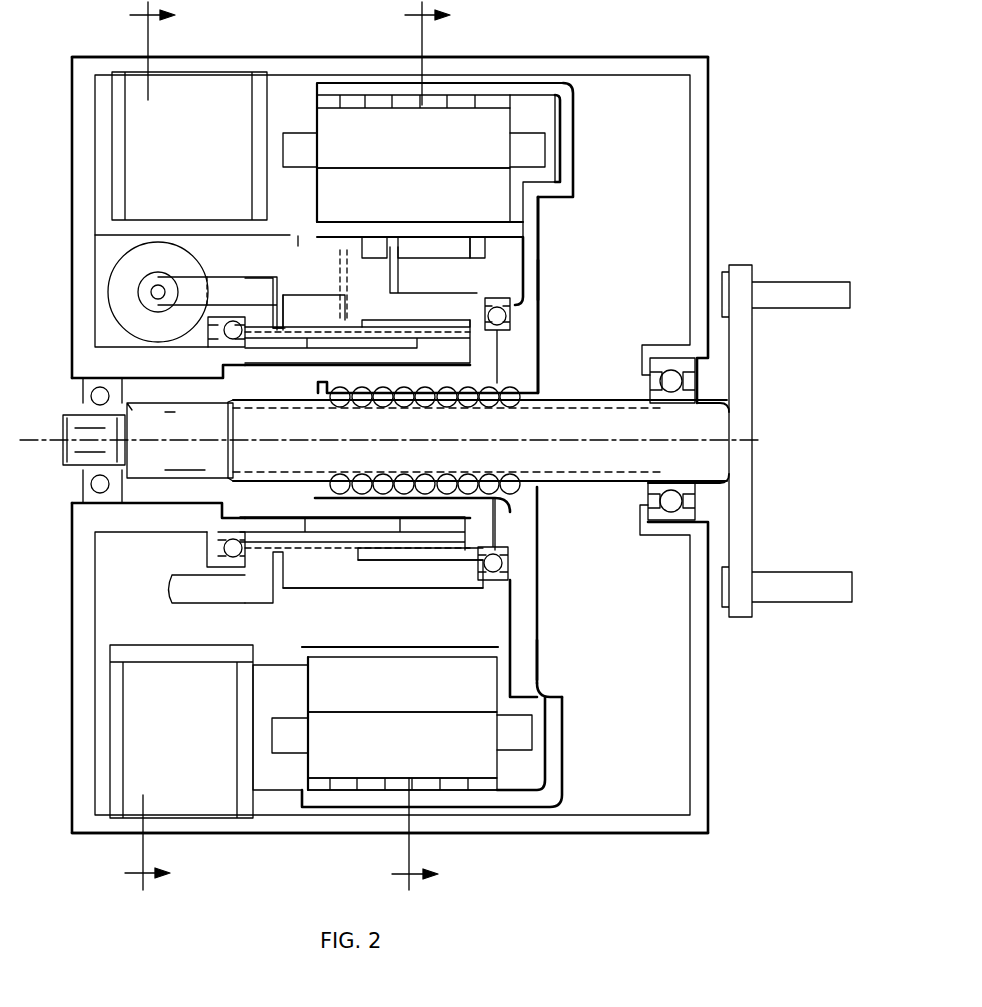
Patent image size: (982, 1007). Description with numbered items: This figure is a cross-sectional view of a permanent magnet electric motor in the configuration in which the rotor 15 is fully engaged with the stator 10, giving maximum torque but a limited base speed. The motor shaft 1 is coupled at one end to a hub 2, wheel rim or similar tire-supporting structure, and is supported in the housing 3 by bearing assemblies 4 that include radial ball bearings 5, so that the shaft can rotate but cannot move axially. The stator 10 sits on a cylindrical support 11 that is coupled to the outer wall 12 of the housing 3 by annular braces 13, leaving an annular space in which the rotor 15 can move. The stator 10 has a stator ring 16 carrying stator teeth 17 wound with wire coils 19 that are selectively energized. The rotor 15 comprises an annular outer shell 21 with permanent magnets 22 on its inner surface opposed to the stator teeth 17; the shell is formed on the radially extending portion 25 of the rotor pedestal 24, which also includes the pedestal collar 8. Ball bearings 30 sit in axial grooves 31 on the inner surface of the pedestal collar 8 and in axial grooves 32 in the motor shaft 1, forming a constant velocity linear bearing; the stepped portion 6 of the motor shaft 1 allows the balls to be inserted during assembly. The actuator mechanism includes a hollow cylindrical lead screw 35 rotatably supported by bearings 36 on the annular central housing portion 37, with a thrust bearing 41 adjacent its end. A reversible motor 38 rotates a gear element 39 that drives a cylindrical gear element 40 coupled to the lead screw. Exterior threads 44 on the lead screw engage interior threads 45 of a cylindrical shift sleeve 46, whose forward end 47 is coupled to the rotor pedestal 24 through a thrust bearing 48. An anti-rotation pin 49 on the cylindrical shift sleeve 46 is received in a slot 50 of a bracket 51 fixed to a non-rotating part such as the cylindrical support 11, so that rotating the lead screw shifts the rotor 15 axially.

The motor shaft 1 is at (612, 470).
The hub 2 is at (780, 262).
The housing 3 is at (78, 258).
The bearing assemblies 4 is at (62, 400).
The radial ball bearings 5 is at (710, 503).
The stepped portion 6 is at (234, 415).
The pedestal collar 8 is at (470, 312).
The stator 10 is at (310, 178).
The cylindrical support 11 is at (303, 251).
The outer wall 12 is at (318, 58).
The annular braces 13 is at (127, 148).
The rotor 15 is at (298, 93).
The stator ring 16 is at (472, 200).
The stator teeth 17 is at (478, 153).
The wire coils 19 is at (520, 145).
The annular outer shell 21 is at (565, 90).
The permanent magnets 22 is at (302, 797).
The rotor pedestal 24 is at (560, 275).
The radially extending portion 25 is at (540, 260).
The ball bearings 30 is at (385, 408).
The axial grooves 31 is at (548, 385).
The axial grooves 32 is at (258, 470).
The hollow cylindrical lead screw 35 is at (330, 325).
The bearings 36 is at (228, 342).
The annular central housing portion 37 is at (328, 362).
The reversible motor 38 is at (180, 240).
The gear element 39 is at (105, 250).
The cylindrical gear element 40 is at (238, 295).
The thrust bearing 41 is at (245, 325).
The exterior threads 44 is at (470, 312).
The interior threads 45 is at (338, 278).
The cylindrical shift sleeve 46 is at (378, 315).
The forward end 47 is at (515, 320).
The thrust bearing 48 is at (515, 345).
The anti-rotation pin 49 is at (398, 272).
The slot 50 is at (395, 240).
The bracket 51 is at (480, 237).